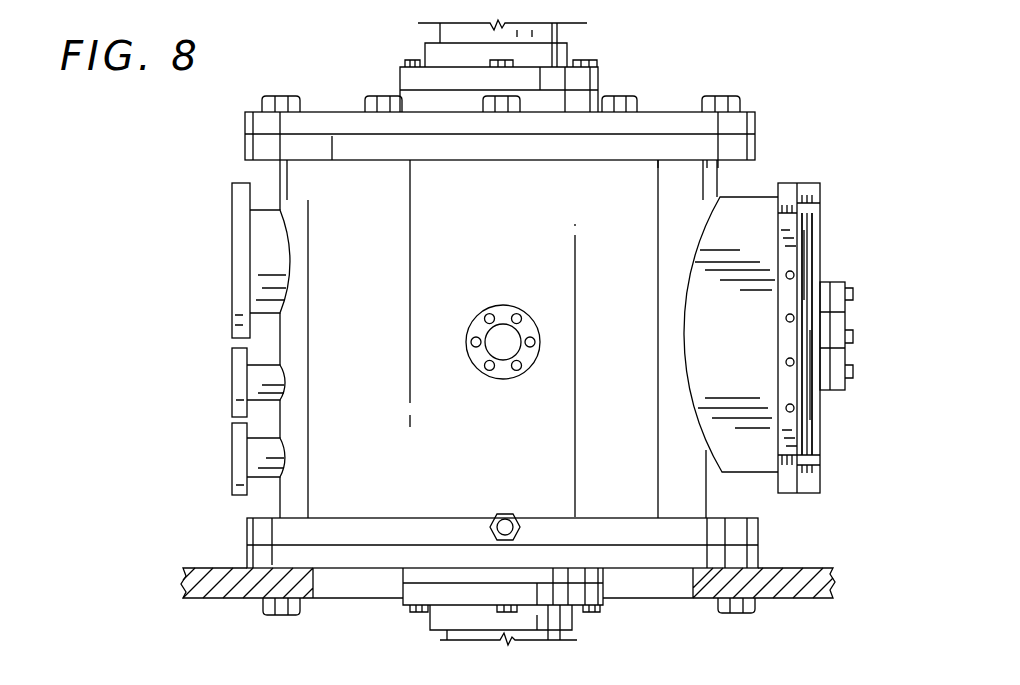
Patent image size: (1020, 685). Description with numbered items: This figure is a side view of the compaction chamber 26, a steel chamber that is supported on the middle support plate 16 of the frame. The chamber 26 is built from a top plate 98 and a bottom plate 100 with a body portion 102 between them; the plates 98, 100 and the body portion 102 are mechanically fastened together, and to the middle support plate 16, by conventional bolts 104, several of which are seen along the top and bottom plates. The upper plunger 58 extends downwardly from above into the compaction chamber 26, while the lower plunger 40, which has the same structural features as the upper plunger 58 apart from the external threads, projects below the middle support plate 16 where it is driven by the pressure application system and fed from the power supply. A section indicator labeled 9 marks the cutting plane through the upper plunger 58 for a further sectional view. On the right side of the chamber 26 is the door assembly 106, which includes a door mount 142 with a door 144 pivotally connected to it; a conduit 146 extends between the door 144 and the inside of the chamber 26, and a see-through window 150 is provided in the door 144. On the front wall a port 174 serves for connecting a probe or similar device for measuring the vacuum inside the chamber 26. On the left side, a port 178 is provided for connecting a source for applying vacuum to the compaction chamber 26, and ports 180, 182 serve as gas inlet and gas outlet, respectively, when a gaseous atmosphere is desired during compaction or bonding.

The section line for FIG. 9 is at (497, 0).
The middle support plate 16 is at (835, 578).
The compaction chamber 26 is at (188, 188).
The lower plunger 40 is at (565, 643).
The upper plunger 58 is at (558, 30).
The top plate 98 is at (678, 110).
The bottom plate 100 is at (760, 553).
The body portion 102 is at (768, 157).
The bolts 104 is at (373, 93).
The door assembly 106 is at (828, 186).
The door mount 142 is at (789, 183).
The door 144 is at (822, 243).
The conduit 146 is at (740, 197).
The see-through window 150 is at (846, 313).
The port 174 is at (505, 305).
The port 178 is at (230, 262).
The port 180 is at (232, 388).
The port 182 is at (232, 462).